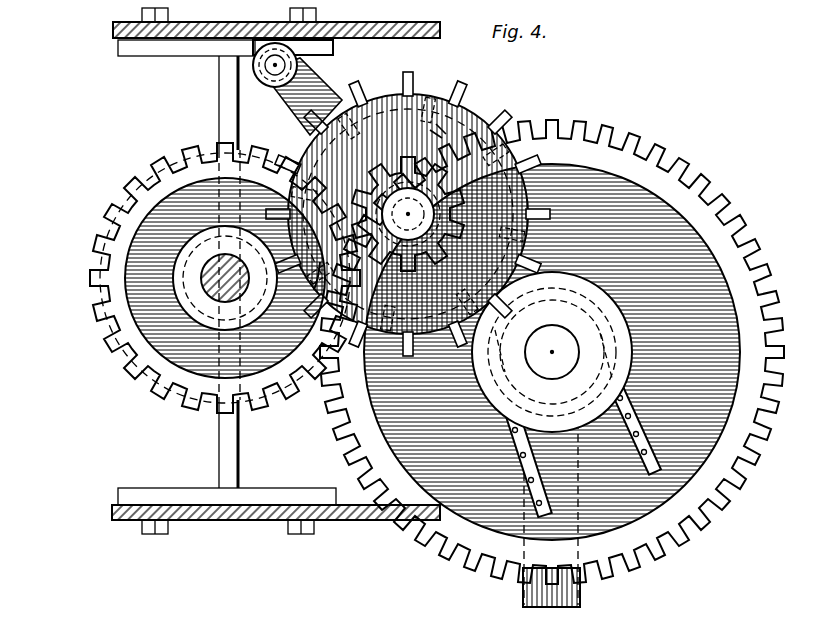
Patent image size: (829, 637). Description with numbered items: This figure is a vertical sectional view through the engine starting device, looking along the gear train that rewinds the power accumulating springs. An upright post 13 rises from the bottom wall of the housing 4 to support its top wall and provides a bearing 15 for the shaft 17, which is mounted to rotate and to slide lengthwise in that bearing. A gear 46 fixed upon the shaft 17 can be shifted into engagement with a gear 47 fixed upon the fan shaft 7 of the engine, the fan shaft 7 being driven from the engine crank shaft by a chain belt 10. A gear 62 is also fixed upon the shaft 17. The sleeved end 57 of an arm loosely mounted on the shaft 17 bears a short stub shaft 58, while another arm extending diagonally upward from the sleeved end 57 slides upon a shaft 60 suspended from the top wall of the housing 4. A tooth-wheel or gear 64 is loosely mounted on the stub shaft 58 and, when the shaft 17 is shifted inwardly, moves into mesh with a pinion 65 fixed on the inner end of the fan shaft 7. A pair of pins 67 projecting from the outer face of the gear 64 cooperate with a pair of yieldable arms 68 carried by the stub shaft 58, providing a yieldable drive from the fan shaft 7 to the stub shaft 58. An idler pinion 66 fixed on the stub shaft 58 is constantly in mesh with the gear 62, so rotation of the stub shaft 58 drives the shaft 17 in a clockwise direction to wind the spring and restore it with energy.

The housing 4 is at (437, 32).
The fan shaft 7 is at (560, 348).
The chain belt 10 is at (625, 413).
The upright post 13 is at (228, 444).
The bearing 15 is at (333, 273).
The shaft 17 is at (222, 266).
The gear 46 is at (177, 158).
The gear 47 is at (633, 152).
The sleeved end of arm 57 is at (255, 67).
The stub shaft 58 is at (490, 150).
The shaft 60 is at (297, 63).
The gear 62 is at (118, 297).
The tooth-wheel or gear 64 is at (404, 84).
The pinion 65 is at (600, 270).
The idler pinion 66 is at (406, 160).
The pins 67 is at (433, 133).
The yieldable arms 68 is at (430, 128).